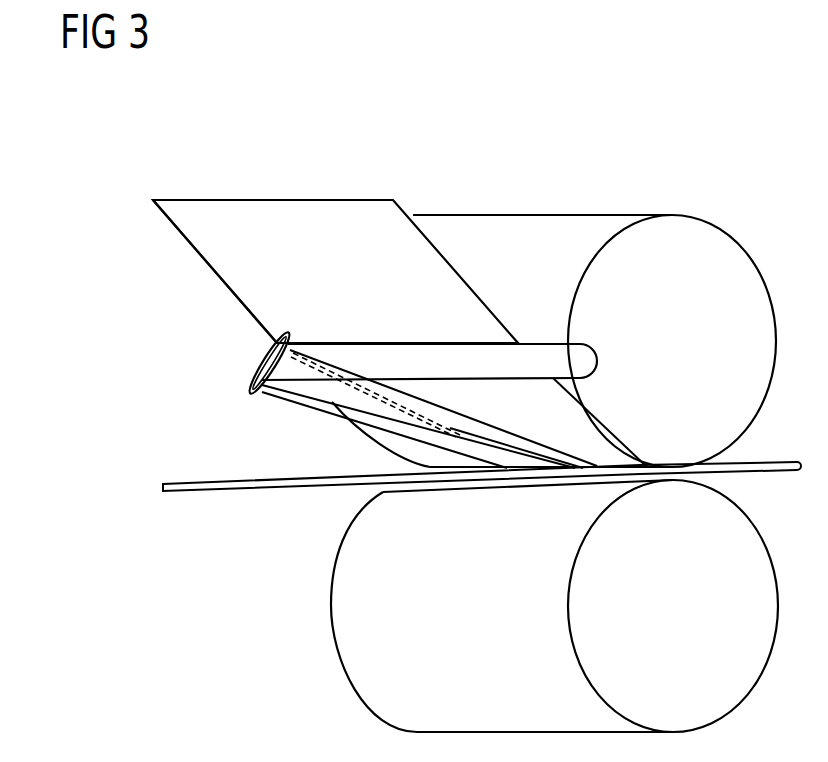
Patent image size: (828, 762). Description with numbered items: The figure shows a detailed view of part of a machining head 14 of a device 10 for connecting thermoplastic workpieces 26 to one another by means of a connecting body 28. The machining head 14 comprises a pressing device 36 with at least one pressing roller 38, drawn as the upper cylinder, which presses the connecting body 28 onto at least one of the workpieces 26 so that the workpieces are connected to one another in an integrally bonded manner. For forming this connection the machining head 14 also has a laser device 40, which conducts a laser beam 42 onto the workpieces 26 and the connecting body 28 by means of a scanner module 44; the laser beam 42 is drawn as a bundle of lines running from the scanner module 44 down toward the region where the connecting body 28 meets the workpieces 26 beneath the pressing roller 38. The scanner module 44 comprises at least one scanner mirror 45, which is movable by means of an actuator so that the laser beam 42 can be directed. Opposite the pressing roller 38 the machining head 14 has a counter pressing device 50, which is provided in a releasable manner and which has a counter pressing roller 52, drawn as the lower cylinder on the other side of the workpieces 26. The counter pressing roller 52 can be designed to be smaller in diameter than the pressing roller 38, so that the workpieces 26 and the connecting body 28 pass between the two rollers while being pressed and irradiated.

The device 10 is at (185, 180).
The machining head 14 is at (302, 188).
The thermoplastic workpieces 26 is at (202, 494).
The connecting body 28 is at (215, 246).
The pressing device 36 is at (512, 198).
The pressing roller 38 is at (587, 230).
The laser device 40 is at (150, 392).
The laser beam 42 is at (335, 398).
The scanner module 44 is at (262, 346).
The scanner mirror 45 is at (250, 388).
The counter pressing device 50 is at (318, 659).
The counter pressing roller 52 is at (350, 587).